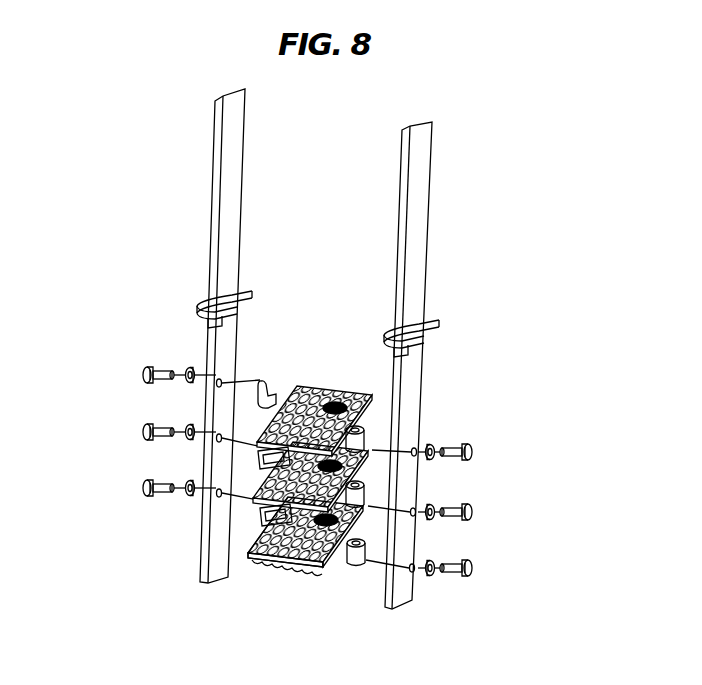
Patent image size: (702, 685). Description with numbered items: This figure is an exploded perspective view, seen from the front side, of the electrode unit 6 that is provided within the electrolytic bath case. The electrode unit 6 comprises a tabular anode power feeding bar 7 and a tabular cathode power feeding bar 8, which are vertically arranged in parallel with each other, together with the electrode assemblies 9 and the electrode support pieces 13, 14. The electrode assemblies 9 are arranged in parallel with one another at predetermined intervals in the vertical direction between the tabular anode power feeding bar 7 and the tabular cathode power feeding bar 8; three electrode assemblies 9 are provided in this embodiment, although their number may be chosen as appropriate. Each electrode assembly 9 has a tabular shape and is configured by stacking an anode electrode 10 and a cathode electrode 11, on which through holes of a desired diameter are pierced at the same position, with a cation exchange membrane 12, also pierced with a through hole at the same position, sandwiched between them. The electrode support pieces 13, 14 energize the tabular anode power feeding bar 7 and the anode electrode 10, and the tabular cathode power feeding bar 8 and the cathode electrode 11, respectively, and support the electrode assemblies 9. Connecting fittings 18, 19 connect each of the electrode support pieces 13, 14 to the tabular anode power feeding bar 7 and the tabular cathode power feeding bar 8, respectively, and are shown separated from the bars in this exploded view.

The electrode unit 6 is at (480, 288).
The tabular anode power feeding bar 7 is at (415, 376).
The tabular cathode power feeding bar 8 is at (206, 333).
The electrode assembly 9 is at (297, 473).
The anode electrode 10 is at (267, 560).
The cathode electrode 11 is at (256, 542).
The cation exchange membrane 12 is at (281, 564).
The electrode support piece 13 is at (348, 568).
The electrode support piece 14 is at (262, 517).
The connecting fitting 18 is at (497, 452).
The connecting fitting 19 is at (117, 355).